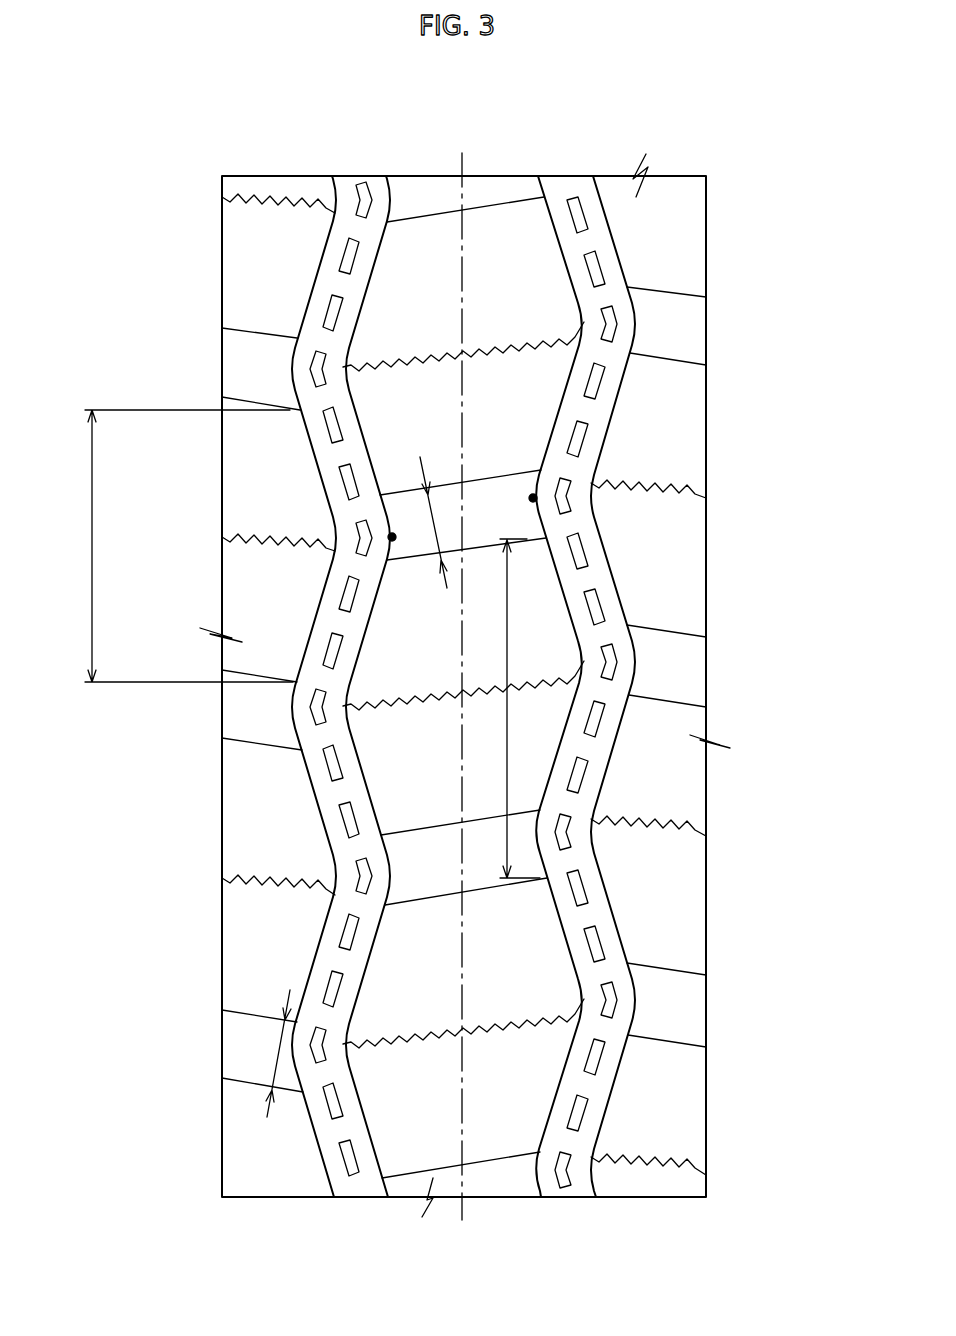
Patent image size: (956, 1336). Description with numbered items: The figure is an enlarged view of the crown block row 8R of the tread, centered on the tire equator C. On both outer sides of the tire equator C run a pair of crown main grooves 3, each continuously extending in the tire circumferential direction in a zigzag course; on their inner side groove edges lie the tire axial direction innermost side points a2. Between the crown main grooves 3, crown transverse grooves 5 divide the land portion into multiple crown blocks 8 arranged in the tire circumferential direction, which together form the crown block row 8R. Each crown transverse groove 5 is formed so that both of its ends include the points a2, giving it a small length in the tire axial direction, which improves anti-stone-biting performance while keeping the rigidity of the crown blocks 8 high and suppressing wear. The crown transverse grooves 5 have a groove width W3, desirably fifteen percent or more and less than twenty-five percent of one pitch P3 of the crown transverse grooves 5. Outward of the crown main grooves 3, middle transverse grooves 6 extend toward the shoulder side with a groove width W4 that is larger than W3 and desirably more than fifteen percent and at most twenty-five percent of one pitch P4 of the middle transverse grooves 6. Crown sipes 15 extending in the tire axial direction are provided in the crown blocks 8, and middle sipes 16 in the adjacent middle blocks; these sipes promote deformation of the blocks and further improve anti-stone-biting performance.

The crown main groove 3 is at (351, 208).
The crown block row 8R is at (514, 245).
The crown block 8 is at (502, 1142).
The tire equator C is at (462, 673).
The crown transverse groove 5 is at (498, 516).
The crown sipe 15 is at (527, 675).
The middle sipe 16 is at (265, 872).
The middle transverse groove 6 is at (236, 1056).
The tire axial direction innermost side point of the inner side groove edge a2 is at (392, 537).
The groove width of the crown transverse grooves W3 is at (433, 537).
The groove width of the middle transverse grooves W4 is at (272, 1068).
The pitch of the crown transverse grooves P3 is at (507, 717).
The pitch of the middle transverse grooves P4 is at (172, 546).